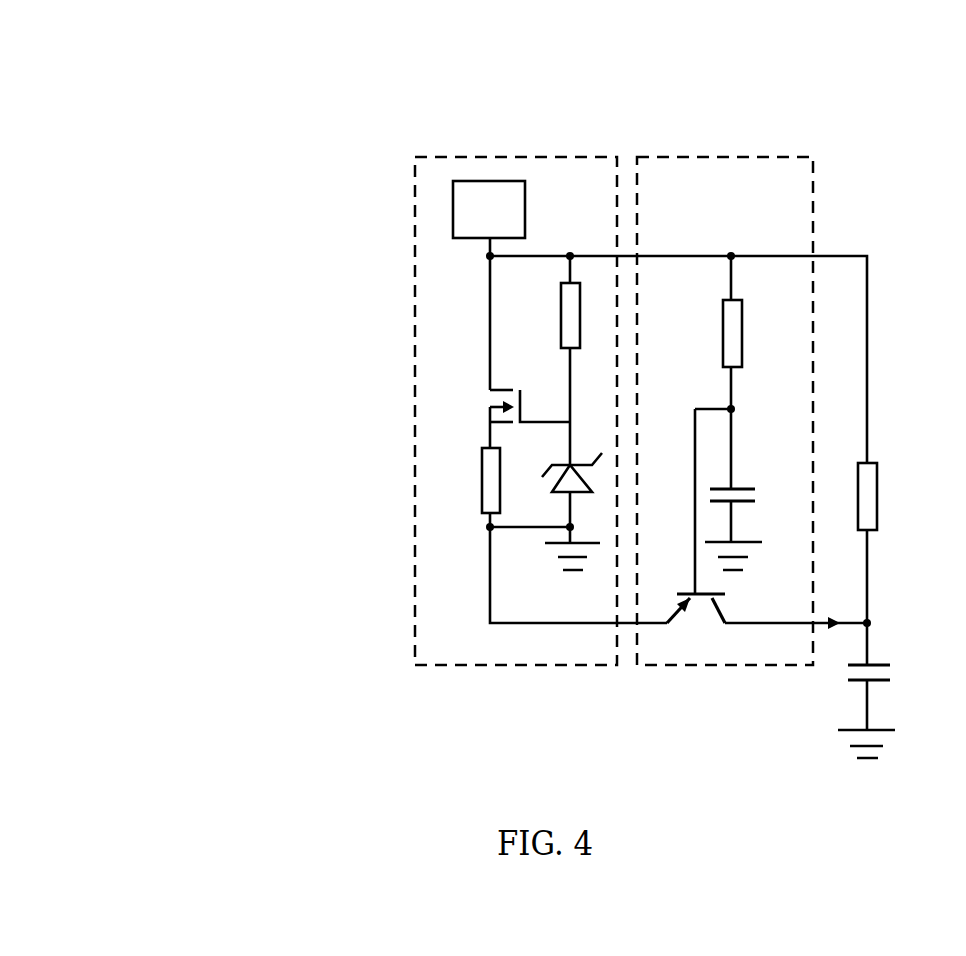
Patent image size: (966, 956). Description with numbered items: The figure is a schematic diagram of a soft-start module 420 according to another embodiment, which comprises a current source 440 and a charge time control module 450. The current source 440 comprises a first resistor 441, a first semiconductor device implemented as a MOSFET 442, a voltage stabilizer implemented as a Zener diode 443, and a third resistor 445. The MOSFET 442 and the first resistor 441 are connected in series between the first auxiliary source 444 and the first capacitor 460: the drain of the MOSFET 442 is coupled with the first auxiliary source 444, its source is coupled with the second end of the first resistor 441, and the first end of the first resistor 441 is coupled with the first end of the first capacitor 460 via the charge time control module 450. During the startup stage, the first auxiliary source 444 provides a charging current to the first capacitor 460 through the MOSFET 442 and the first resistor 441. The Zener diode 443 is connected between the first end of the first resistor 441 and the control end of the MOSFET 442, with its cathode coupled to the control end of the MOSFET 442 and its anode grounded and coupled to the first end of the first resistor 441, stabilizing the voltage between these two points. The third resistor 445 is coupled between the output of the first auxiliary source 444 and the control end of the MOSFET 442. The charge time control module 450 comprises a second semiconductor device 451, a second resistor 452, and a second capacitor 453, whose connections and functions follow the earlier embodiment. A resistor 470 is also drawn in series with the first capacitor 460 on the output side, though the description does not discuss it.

The soft-start module 420 is at (216, 93).
The current source 440 is at (507, 667).
The first resistor 441 is at (462, 480).
The MOSFET 442 is at (478, 406).
The Zener diode 443 is at (560, 489).
The first auxiliary source 444 is at (487, 180).
The third resistor 445 is at (542, 315).
The charge time control module 450 is at (767, 667).
The second semiconductor device 451 is at (697, 634).
The second resistor 452 is at (703, 333).
The second capacitor 453 is at (754, 479).
The first capacitor 460 is at (902, 675).
The load resistor 470 is at (896, 496).